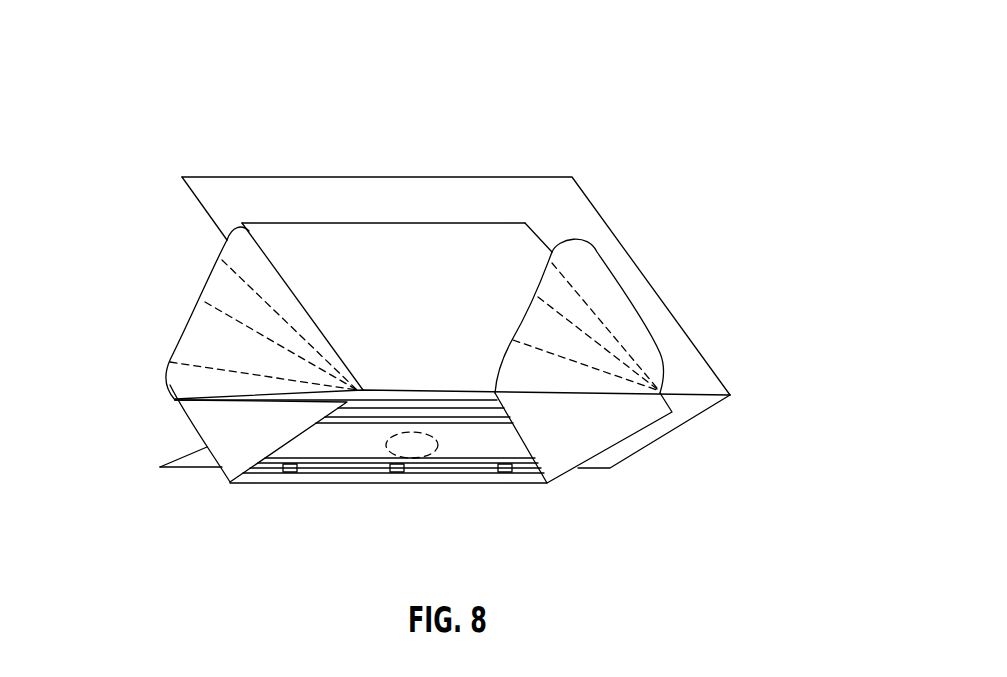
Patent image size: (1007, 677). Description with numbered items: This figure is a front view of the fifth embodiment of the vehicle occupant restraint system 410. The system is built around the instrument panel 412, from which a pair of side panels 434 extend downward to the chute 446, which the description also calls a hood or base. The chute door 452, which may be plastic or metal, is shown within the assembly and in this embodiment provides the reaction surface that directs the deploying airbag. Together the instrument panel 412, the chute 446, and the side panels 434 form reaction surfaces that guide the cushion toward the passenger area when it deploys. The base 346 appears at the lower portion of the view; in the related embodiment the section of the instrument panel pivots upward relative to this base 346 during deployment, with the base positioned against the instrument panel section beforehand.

The vehicle occupant restraint system 410 is at (448, 303).
The instrument panel 412 is at (483, 175).
The chute door 452 is at (390, 223).
The side panels 434 is at (197, 323).
The chute 446 is at (200, 440).
The base 346 is at (542, 485).